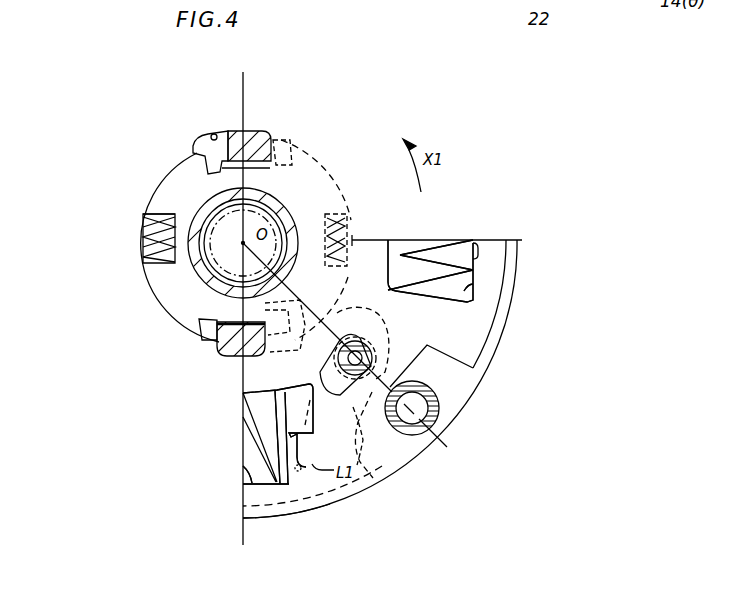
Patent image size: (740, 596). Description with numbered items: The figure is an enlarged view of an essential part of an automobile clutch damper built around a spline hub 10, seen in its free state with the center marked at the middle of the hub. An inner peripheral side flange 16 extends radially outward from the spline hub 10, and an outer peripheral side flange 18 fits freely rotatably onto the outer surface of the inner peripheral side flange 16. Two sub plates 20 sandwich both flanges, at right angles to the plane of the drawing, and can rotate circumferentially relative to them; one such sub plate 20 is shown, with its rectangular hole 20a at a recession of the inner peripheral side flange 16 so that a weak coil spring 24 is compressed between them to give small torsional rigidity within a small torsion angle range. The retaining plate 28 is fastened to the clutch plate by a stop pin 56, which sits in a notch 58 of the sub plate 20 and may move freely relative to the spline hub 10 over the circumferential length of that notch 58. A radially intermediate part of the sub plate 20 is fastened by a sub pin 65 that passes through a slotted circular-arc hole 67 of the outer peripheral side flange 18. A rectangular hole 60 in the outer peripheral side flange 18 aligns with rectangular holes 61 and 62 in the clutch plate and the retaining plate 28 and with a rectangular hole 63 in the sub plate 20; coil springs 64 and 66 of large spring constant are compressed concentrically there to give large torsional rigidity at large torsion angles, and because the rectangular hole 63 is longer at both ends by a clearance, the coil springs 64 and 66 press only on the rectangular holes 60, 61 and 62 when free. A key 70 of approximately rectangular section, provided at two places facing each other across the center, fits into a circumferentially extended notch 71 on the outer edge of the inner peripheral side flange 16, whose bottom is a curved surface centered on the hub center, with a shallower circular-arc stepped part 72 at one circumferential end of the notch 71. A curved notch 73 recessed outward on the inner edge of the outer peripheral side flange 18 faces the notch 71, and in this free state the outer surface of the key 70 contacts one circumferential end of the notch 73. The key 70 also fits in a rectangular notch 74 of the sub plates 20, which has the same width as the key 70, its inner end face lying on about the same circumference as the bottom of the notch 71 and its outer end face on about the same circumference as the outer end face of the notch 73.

The spline hub 10 is at (292, 213).
The inner peripheral side flange 16 is at (172, 297).
The outer peripheral side flange 18 is at (510, 246).
The sub plate 20 is at (350, 497).
The rectangular hole 20a is at (143, 216).
The coil spring 24 is at (143, 246).
The retaining plate 28 is at (318, 512).
The stop pin 56 is at (437, 419).
The notch 58 is at (376, 426).
The rectangular hole 60 is at (470, 293).
The rectangular hole 61 is at (480, 281).
The rectangular hole 62 is at (278, 434).
The rectangular hole 63 is at (474, 252).
The coil spring 64 is at (433, 242).
The sub pin 65 is at (328, 372).
The coil spring 66 is at (434, 226).
The slotted circular-arc hole 67 is at (328, 392).
The key 70 is at (249, 131).
The notch 71 is at (195, 147).
The circular-arc stepped part 72 is at (284, 140).
The notch 73 is at (216, 129).
The notch 74 is at (238, 176).